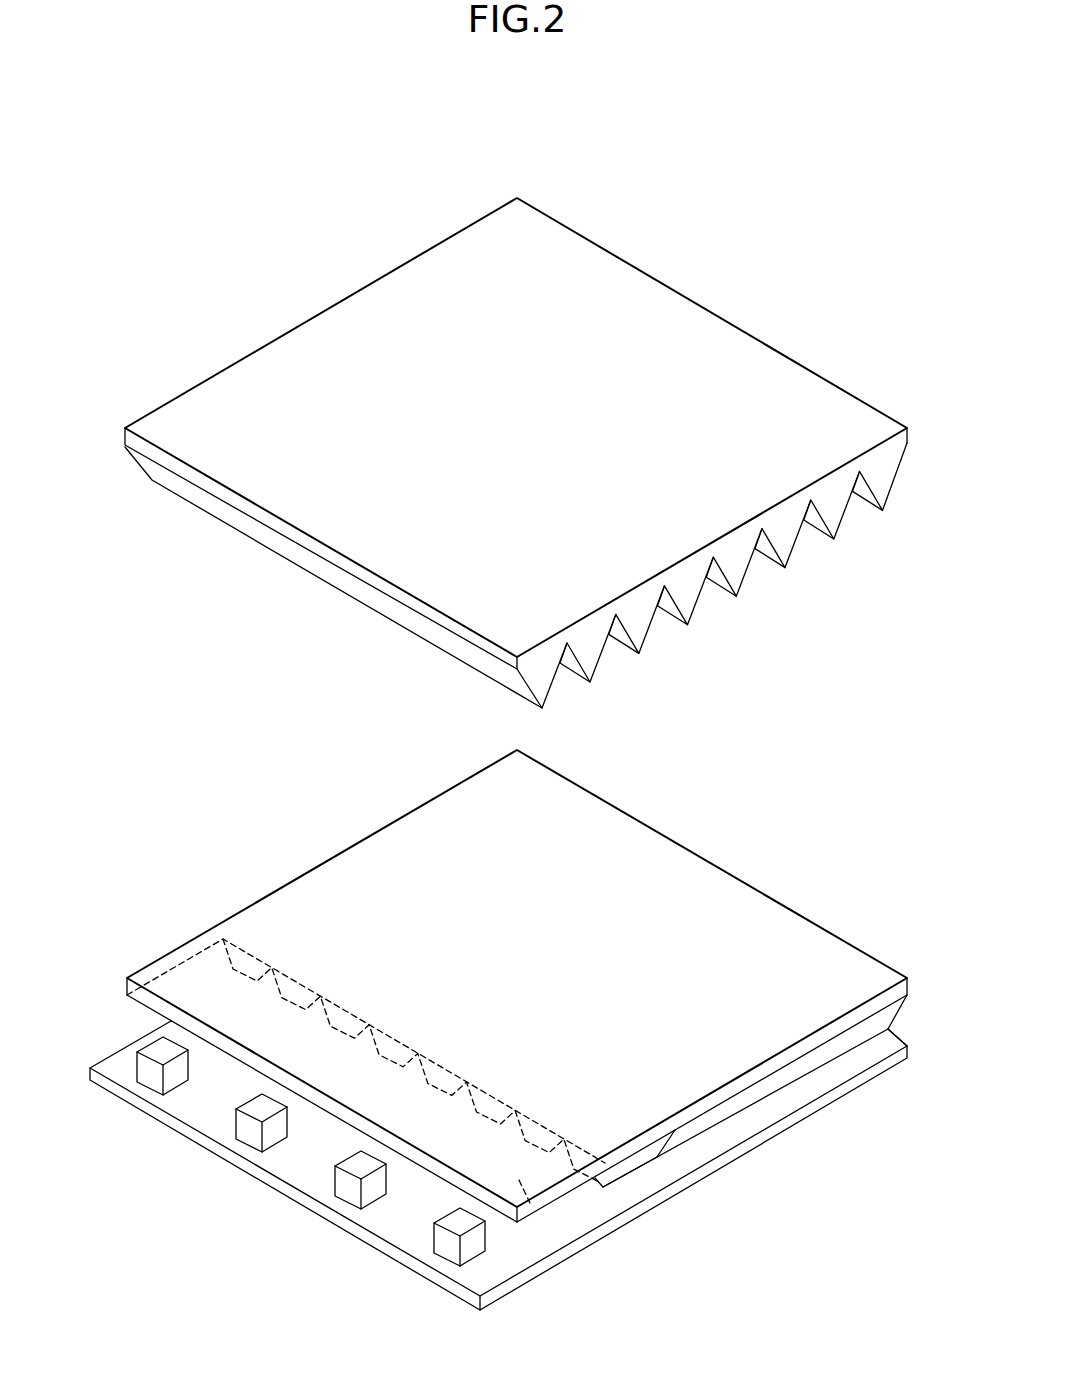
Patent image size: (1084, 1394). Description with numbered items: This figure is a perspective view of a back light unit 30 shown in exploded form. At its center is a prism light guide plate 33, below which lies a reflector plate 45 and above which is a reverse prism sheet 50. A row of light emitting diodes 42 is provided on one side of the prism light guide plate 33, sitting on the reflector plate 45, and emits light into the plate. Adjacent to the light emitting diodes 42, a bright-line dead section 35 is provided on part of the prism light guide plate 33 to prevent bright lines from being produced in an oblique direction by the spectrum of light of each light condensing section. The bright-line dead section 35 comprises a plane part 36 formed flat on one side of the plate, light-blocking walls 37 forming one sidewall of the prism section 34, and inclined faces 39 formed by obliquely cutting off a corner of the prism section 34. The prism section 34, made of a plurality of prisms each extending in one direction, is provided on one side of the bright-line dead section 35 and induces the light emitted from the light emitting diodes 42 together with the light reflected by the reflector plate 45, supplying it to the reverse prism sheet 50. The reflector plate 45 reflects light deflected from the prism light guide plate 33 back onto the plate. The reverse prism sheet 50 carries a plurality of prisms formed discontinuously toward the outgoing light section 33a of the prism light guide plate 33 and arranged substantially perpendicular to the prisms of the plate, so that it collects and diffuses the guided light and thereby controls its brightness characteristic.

The reverse prism sheet 50 is at (704, 287).
The back light unit 30 is at (736, 698).
The prism light guide plate 33 is at (517, 985).
The outgoing light section 33a is at (734, 916).
The prism section 34 is at (818, 1058).
The bright-line dead section 35 is at (436, 1131).
The plane part 36 is at (540, 1142).
The light-blocking walls 37 is at (565, 1157).
The inclined faces 39 is at (637, 1165).
The light emitting diodes 42 is at (252, 1130).
The reflector plate 45 is at (383, 1222).